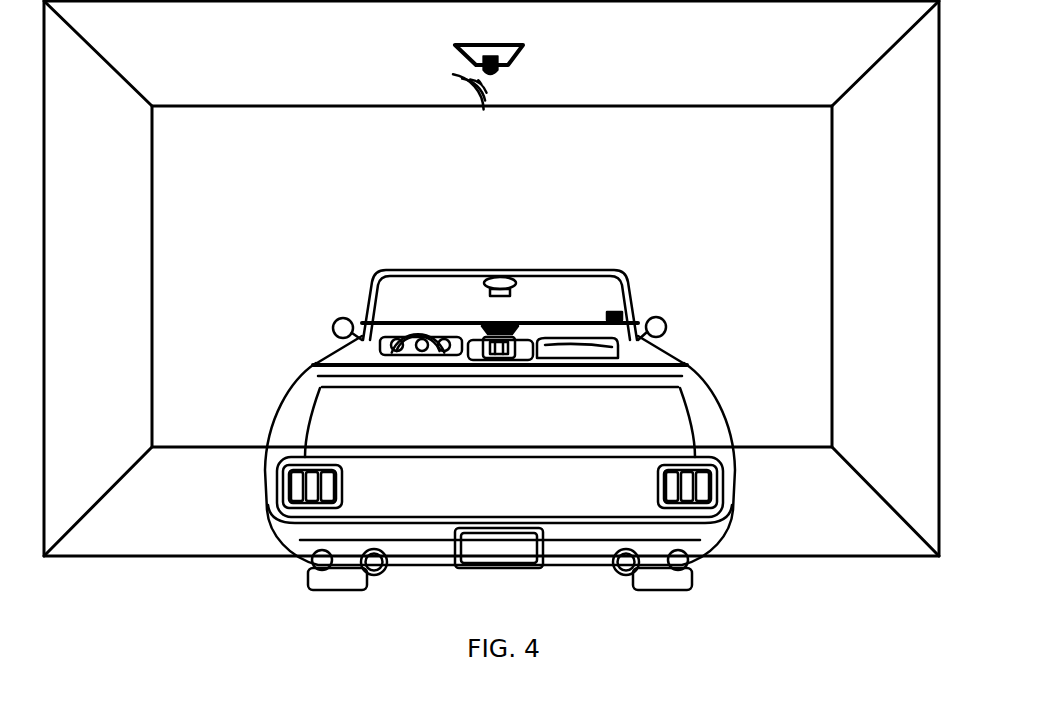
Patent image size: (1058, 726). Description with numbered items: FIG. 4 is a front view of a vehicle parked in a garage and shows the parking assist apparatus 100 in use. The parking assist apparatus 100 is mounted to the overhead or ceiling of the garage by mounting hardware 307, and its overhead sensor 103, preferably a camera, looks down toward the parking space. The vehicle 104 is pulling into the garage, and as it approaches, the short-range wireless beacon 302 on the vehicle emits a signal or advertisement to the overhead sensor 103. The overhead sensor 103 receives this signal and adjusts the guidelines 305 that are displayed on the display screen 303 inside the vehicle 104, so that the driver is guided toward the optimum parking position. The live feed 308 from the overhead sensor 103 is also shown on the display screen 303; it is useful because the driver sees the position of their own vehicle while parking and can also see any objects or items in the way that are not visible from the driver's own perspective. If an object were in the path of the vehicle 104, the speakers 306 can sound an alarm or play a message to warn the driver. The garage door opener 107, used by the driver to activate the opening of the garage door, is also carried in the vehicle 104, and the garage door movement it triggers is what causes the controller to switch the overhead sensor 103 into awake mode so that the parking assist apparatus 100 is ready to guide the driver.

The parking assist apparatus 100 is at (474, 97).
The overhead sensor 103 is at (496, 72).
The vehicle 104 is at (558, 402).
The garage door opener 107 is at (503, 271).
The short-range wireless beacon 302 is at (622, 316).
The display screen 303 is at (488, 337).
The guidelines 305 is at (515, 327).
The speakers 306 is at (483, 108).
The mounting hardware 307 is at (520, 43).
The live feed 308 is at (468, 360).